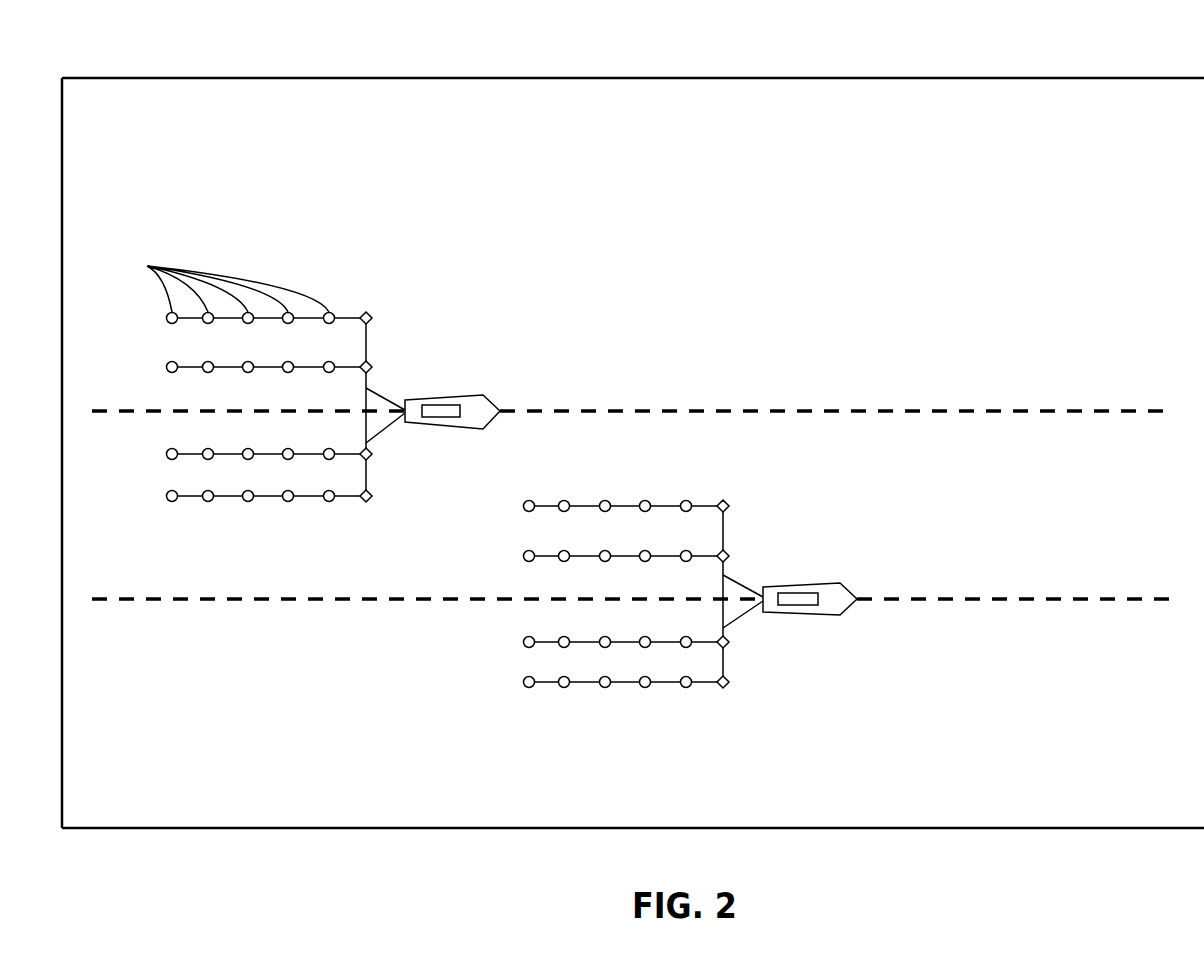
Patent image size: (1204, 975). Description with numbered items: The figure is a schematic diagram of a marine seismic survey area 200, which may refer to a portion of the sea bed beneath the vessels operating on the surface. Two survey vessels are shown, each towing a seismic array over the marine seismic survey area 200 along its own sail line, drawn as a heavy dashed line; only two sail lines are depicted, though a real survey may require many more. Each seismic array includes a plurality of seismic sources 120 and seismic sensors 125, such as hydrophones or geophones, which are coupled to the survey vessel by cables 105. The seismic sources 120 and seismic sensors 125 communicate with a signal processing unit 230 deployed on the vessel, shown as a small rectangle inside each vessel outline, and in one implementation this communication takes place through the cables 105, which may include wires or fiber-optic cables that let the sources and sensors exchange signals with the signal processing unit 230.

The marine seismic survey area 200 is at (605, 78).
The cables 105 is at (345, 318).
The seismic sources 120 is at (366, 312).
The seismic sensors 125 is at (208, 286).
The signal processing unit 230 is at (452, 405).